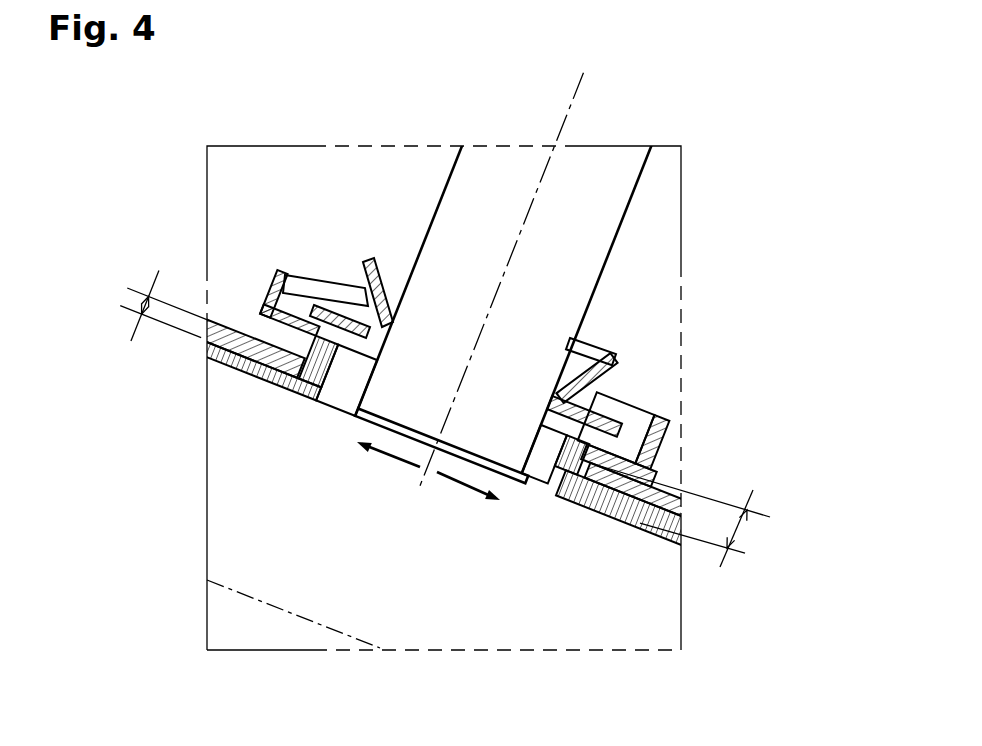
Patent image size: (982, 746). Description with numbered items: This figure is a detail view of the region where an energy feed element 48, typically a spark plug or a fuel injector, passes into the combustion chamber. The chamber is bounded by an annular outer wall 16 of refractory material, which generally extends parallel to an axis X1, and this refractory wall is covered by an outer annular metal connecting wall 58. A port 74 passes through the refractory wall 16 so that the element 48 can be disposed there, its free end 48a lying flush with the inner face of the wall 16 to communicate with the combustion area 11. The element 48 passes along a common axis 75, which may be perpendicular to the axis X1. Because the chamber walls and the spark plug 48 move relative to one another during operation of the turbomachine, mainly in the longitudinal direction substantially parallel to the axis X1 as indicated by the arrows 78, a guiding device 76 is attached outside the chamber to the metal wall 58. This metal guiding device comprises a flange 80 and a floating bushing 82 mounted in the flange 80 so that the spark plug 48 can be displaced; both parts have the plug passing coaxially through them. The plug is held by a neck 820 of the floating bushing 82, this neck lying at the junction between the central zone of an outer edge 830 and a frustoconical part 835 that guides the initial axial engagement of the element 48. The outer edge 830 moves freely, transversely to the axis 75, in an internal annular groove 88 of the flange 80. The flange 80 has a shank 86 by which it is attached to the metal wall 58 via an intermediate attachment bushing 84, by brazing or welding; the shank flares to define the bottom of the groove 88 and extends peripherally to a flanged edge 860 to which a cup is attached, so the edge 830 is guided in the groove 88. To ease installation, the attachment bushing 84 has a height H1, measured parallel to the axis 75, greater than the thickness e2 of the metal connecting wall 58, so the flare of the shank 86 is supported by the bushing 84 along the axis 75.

The energy feed element 48 is at (590, 235).
The free end of the energy feed element 48a is at (367, 418).
The outer annular metal connecting wall 58 is at (258, 352).
The attachment bushing 84 is at (627, 495).
The flanged edge 860 is at (272, 290).
The shank 86 is at (278, 313).
The outer edge of the floating bushing 830 is at (333, 307).
The neck of the floating bushing 820 is at (395, 325).
The frustoconical part 835 is at (583, 340).
The floating bushing 82 is at (614, 376).
The internal annular groove 88 is at (632, 425).
The flange 80 is at (670, 438).
The guiding device 76 is at (668, 461).
The port 74 is at (535, 478).
The common axis 75 is at (578, 103).
The arrows 78 is at (447, 483).
The annular outer wall 16 is at (285, 552).
The combustion area 11 is at (470, 598).
The axis X1 is at (259, 602).
The thickness of the metal connecting wall e2 is at (164, 307).
The height of the attachment bushing H1 is at (691, 516).